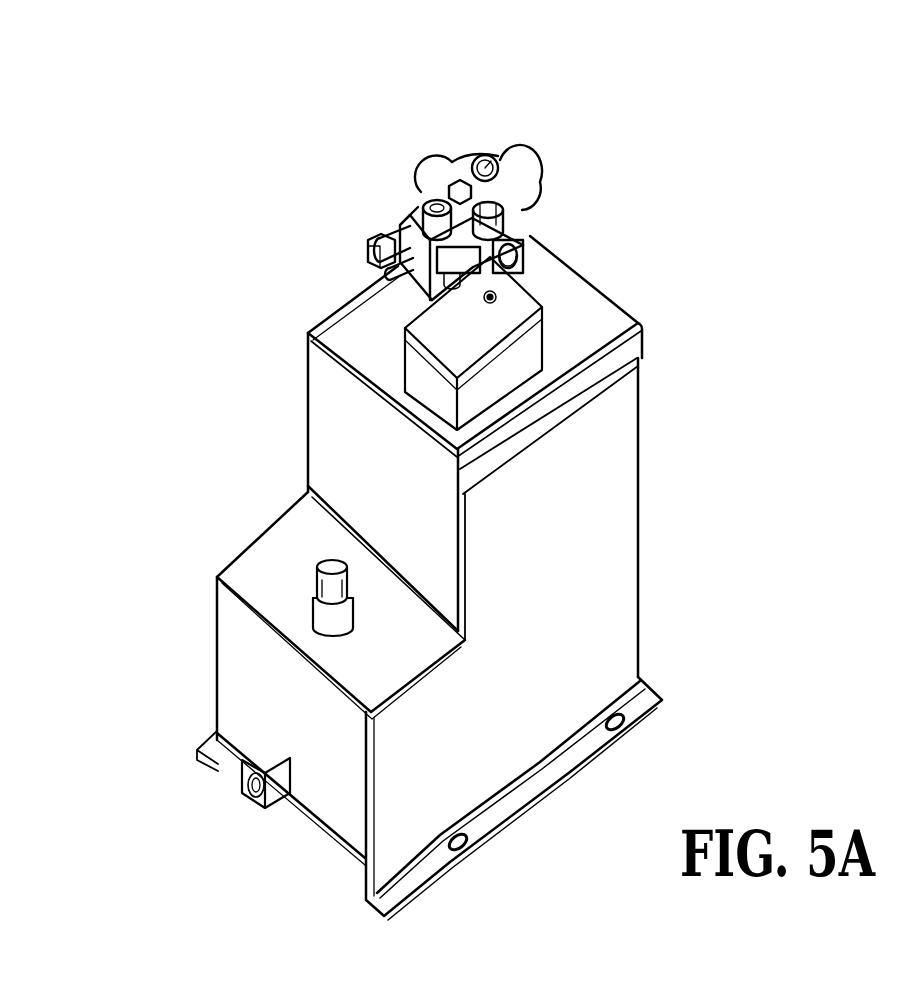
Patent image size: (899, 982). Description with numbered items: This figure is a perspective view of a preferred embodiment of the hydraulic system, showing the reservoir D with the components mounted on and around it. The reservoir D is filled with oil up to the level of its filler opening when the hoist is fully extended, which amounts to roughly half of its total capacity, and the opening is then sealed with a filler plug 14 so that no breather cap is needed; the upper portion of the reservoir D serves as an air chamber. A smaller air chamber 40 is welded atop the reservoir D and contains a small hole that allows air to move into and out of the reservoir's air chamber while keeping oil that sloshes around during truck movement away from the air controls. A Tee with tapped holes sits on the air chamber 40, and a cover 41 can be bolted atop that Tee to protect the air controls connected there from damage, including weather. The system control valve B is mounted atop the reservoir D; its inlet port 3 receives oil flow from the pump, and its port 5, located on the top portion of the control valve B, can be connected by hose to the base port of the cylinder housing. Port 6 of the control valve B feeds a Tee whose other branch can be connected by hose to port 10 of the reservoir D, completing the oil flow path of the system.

The system control valve B is at (500, 169).
The port 5 is at (493, 152).
The port 6 is at (393, 213).
The inlet port 3 is at (535, 265).
The air chamber 40 is at (413, 400).
The cover 41 is at (460, 342).
The filler plug 14 is at (318, 612).
The port 10 is at (252, 798).
The reservoir D is at (501, 578).